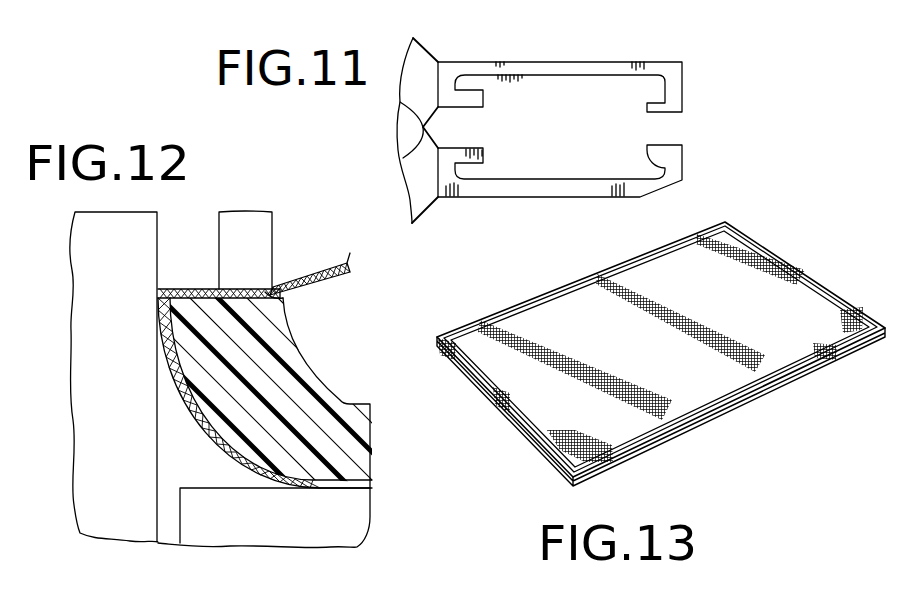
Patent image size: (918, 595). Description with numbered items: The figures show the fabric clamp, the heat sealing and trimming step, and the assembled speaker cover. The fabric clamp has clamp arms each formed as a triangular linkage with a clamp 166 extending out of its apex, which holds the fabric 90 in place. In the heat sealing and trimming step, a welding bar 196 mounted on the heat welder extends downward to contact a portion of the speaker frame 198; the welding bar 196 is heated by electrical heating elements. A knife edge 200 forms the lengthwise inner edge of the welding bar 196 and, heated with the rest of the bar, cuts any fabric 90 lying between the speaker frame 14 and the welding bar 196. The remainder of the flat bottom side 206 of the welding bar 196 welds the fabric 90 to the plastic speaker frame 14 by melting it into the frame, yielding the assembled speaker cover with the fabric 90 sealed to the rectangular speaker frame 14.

In FIG. 12, the speaker frame 14 is at (307, 359).
In FIG. 12, the fabric 90 is at (183, 289).
In FIG. 11, the clamp 166 is at (668, 62).
In FIG. 12, the welding bar 196 is at (273, 222).
In FIG. 12, the portion of the speaker frame 198 is at (268, 296).
In FIG. 12, the knife edge 200 is at (278, 293).
In FIG. 12, the flat bottom side 206 is at (240, 289).